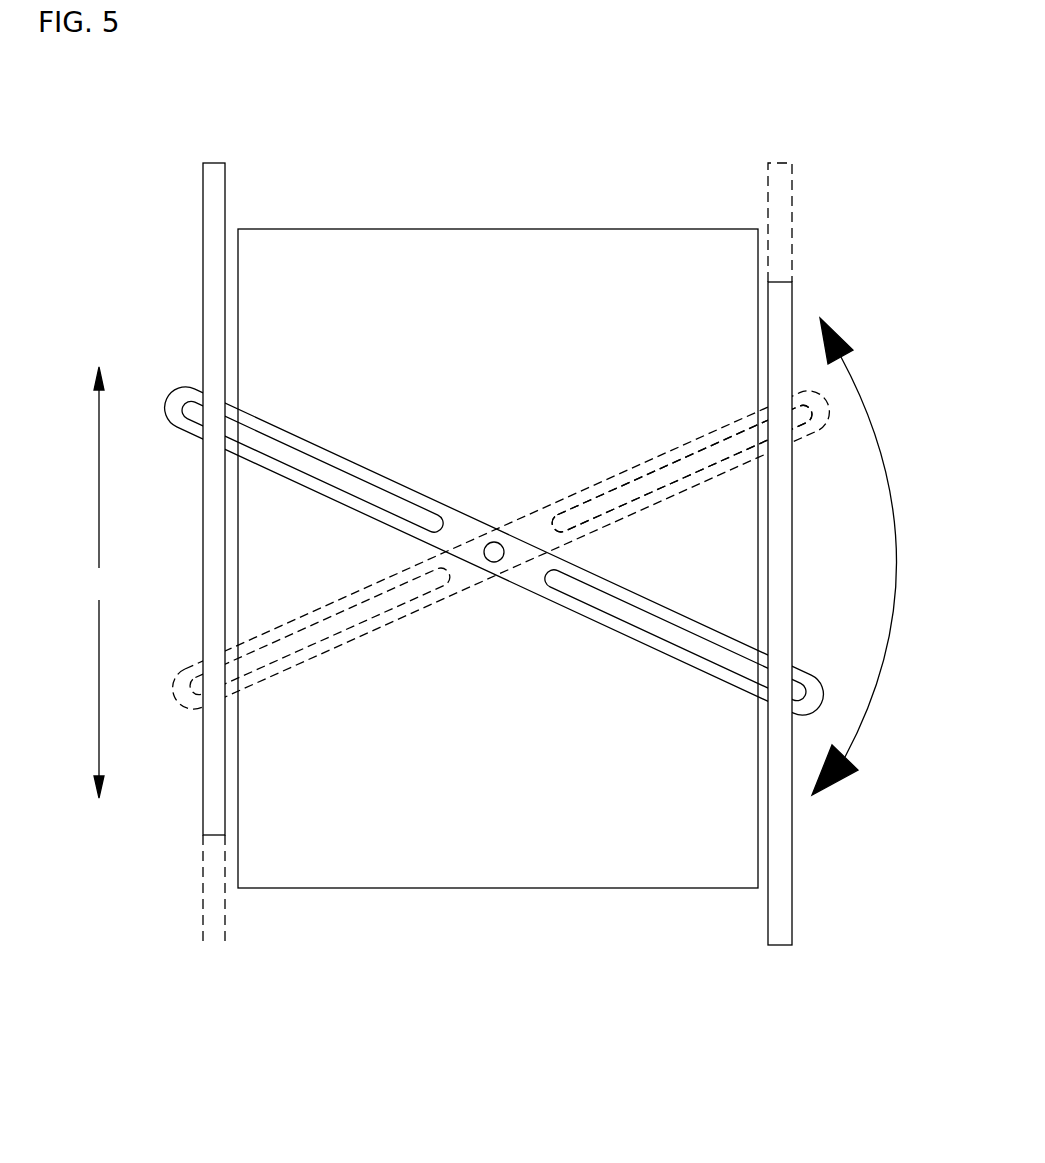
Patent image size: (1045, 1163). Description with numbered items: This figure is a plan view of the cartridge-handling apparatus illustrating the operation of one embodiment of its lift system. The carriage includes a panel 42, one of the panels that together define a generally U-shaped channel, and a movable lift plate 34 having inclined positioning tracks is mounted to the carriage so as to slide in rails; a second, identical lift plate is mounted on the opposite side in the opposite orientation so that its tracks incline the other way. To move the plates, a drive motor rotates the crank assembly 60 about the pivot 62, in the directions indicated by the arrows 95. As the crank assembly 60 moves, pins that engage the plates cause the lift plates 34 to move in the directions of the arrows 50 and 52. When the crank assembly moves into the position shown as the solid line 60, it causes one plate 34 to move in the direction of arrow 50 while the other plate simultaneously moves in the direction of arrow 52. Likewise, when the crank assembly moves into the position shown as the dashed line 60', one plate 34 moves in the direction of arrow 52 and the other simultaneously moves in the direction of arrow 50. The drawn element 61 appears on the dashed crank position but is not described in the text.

The lift plate 34 is at (203, 234).
The panel 42 is at (498, 558).
The arrow 50 is at (99, 410).
The arrow 52 is at (99, 757).
The crank assembly 60 is at (494, 551).
The crank assembly in dashed-line position 60' is at (501, 563).
The slot 61 is at (600, 478).
The pivot 62 is at (488, 567).
The arrows 95 is at (868, 415).